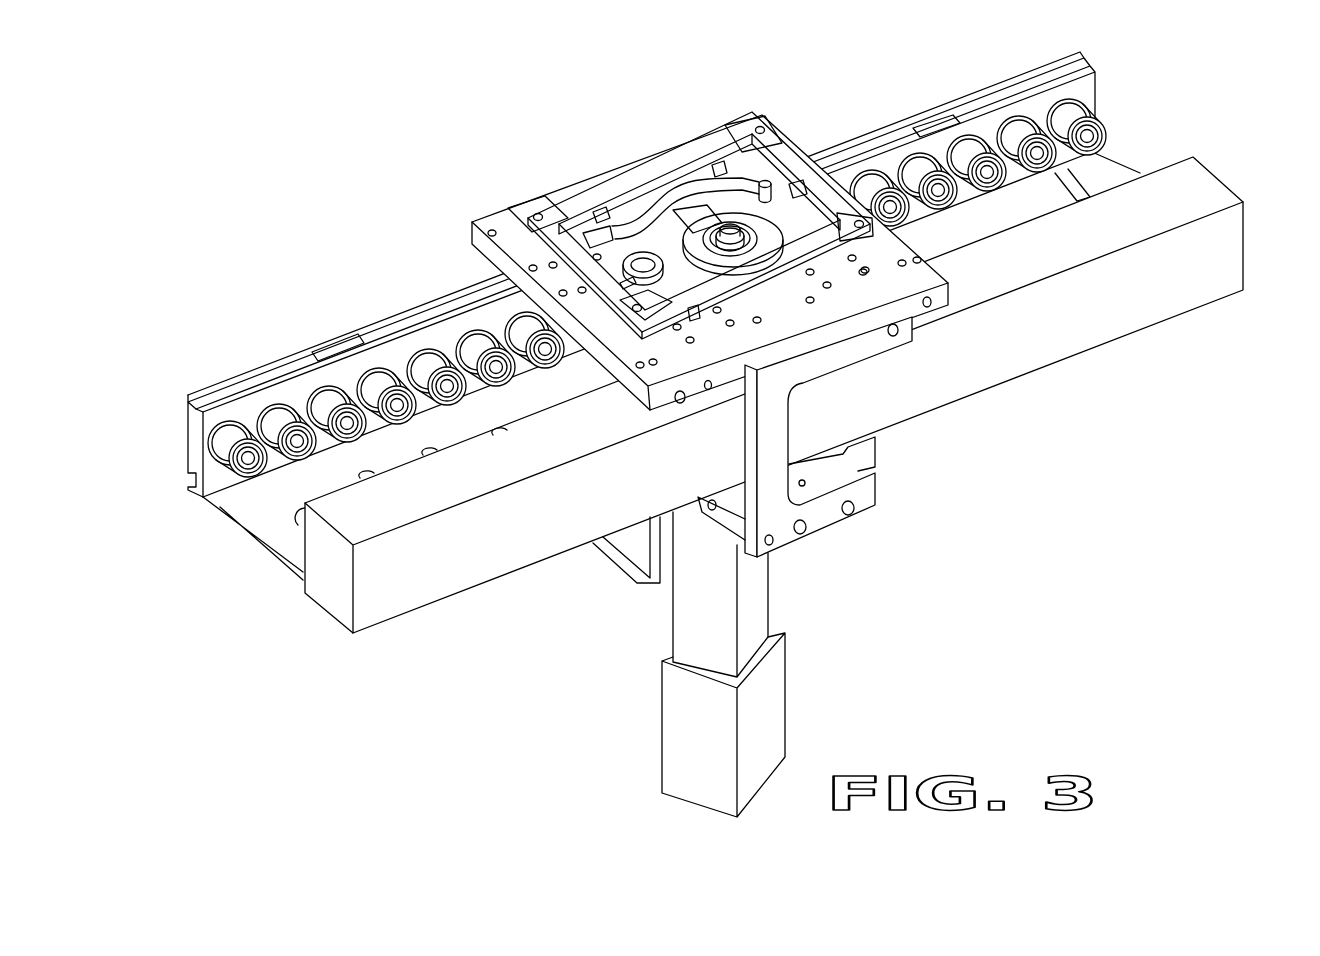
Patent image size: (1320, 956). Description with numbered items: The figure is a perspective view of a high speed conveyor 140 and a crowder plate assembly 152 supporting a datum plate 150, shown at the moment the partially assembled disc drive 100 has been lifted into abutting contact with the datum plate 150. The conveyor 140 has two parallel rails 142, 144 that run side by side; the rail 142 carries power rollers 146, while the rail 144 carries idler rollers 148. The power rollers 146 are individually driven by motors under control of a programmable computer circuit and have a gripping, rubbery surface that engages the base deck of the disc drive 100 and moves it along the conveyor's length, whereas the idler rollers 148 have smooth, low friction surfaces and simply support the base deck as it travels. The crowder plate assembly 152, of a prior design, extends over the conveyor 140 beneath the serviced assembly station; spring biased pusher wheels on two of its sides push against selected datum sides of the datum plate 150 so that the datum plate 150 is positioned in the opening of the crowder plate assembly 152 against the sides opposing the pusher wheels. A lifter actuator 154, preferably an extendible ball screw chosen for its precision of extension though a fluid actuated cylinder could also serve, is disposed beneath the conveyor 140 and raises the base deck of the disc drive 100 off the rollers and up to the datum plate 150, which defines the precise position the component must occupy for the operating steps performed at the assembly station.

The disc drive 100 is at (708, 220).
The conveyor 140 is at (238, 367).
The rail 142 is at (1158, 310).
The rail 144 is at (400, 343).
The power rollers 146 is at (1140, 173).
The idler rollers 148 is at (1020, 137).
The datum plate 150 is at (600, 190).
The crowder plate assembly 152 is at (873, 280).
The lifter actuator 154 is at (773, 592).